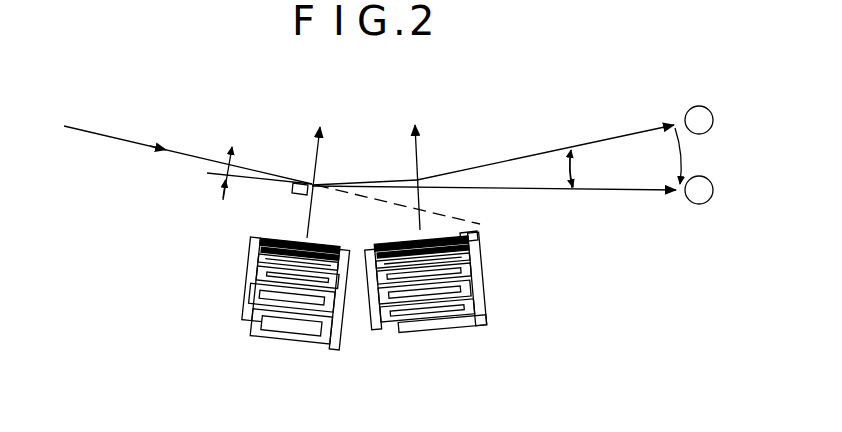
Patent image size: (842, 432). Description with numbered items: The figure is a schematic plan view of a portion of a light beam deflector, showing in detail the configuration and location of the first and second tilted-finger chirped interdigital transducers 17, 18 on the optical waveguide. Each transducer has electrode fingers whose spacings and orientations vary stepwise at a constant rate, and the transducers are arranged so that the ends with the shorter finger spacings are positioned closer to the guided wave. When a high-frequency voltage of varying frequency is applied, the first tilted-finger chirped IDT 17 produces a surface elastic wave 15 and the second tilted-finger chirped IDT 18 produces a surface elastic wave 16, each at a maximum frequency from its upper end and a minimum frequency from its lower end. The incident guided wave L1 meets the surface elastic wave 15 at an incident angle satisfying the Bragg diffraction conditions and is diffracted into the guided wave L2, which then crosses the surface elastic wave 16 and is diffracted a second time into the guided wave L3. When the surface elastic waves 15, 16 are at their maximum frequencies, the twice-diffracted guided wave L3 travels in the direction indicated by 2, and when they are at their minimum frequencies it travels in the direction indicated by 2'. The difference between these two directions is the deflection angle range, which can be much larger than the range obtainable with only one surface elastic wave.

The guided wave L1 is at (104, 133).
The diffracted guided wave L2 is at (378, 180).
The twice-diffracted guided wave L3 is at (530, 154).
The surface elastic wave 15 is at (313, 157).
The surface elastic wave 16 is at (420, 162).
The first tilted-finger chirped interdigital transducer 17 is at (241, 330).
The second tilted-finger chirped interdigital transducer 18 is at (374, 328).
The direction of travel at maximum frequency 2 is at (699, 120).
The direction of travel at minimum frequency 2' is at (703, 186).